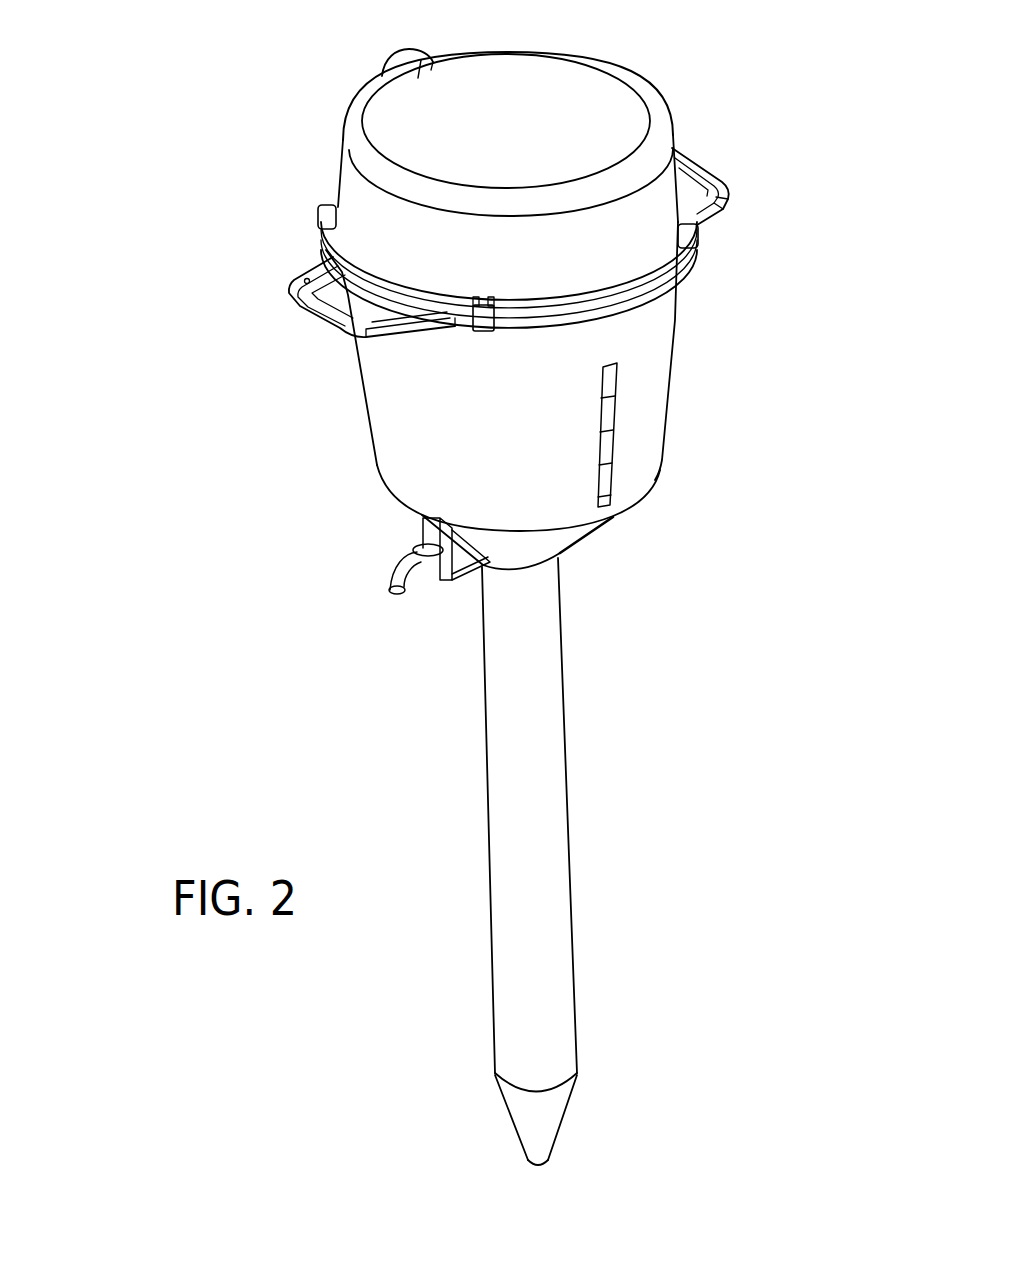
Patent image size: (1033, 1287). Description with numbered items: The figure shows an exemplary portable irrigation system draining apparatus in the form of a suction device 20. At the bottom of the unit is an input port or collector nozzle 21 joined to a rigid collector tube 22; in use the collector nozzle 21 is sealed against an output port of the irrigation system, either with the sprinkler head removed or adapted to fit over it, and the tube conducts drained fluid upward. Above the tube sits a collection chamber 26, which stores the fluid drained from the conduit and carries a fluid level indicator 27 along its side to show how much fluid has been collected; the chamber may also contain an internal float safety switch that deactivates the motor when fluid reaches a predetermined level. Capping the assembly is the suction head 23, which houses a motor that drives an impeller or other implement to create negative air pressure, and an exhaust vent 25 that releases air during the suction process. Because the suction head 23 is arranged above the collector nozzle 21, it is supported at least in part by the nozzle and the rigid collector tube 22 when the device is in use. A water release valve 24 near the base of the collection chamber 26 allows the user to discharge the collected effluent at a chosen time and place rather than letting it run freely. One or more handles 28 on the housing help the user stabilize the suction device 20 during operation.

The suction device 20 is at (147, 683).
The collector nozzle 21 is at (552, 1130).
The collector tube 22 is at (550, 895).
The suction head 23 is at (650, 110).
The water release valve 24 is at (415, 573).
The exhaust vent 25 is at (380, 70).
The collection chamber 26 is at (657, 410).
The fluid level indicator 27 is at (610, 465).
The handle 28 is at (323, 335).